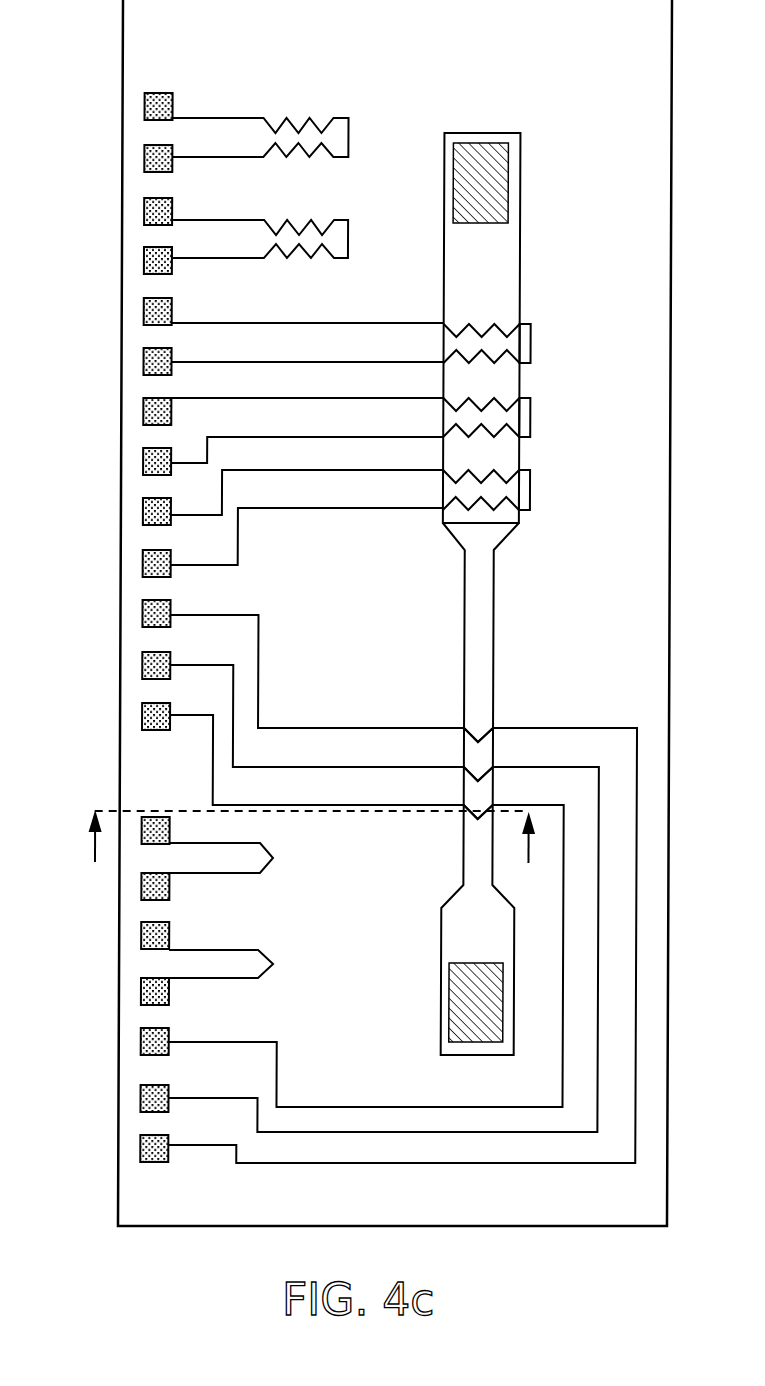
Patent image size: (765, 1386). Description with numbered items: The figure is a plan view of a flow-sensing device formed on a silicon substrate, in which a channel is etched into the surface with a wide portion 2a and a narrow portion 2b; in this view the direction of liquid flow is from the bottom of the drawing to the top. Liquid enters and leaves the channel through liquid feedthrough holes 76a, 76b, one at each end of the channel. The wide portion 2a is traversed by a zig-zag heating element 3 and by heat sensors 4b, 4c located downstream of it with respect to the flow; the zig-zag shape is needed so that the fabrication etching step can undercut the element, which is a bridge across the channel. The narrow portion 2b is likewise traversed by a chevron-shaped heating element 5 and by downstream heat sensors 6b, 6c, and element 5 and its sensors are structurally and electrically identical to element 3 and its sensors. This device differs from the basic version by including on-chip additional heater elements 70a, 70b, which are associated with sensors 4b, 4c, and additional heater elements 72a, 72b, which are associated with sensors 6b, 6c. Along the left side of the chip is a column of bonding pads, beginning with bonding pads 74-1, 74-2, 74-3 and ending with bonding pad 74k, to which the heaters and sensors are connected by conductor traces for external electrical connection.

The bonding pad 74-1 is at (145, 102).
The bonding pad 74-2 is at (145, 158).
The bonding pad 74-3 is at (143, 208).
The bonding pad 74k is at (158, 1160).
The additional heater element 70a is at (349, 133).
The additional heater element 70b is at (349, 242).
The liquid feedthrough hole 76a is at (496, 186).
The liquid feedthrough hole 76b is at (462, 993).
The wide portion of channel 2a is at (489, 274).
The narrow portion of channel 2b is at (483, 655).
The heat sensor 4c is at (533, 335).
The heat sensor 4b is at (534, 415).
The heating element 3 is at (534, 485).
The heat sensor 6c is at (485, 732).
The heat sensor 6b is at (485, 773).
The chevron-shaped heating element 5 is at (481, 822).
The additional heater element 72a is at (280, 850).
The additional heater element 72b is at (281, 957).